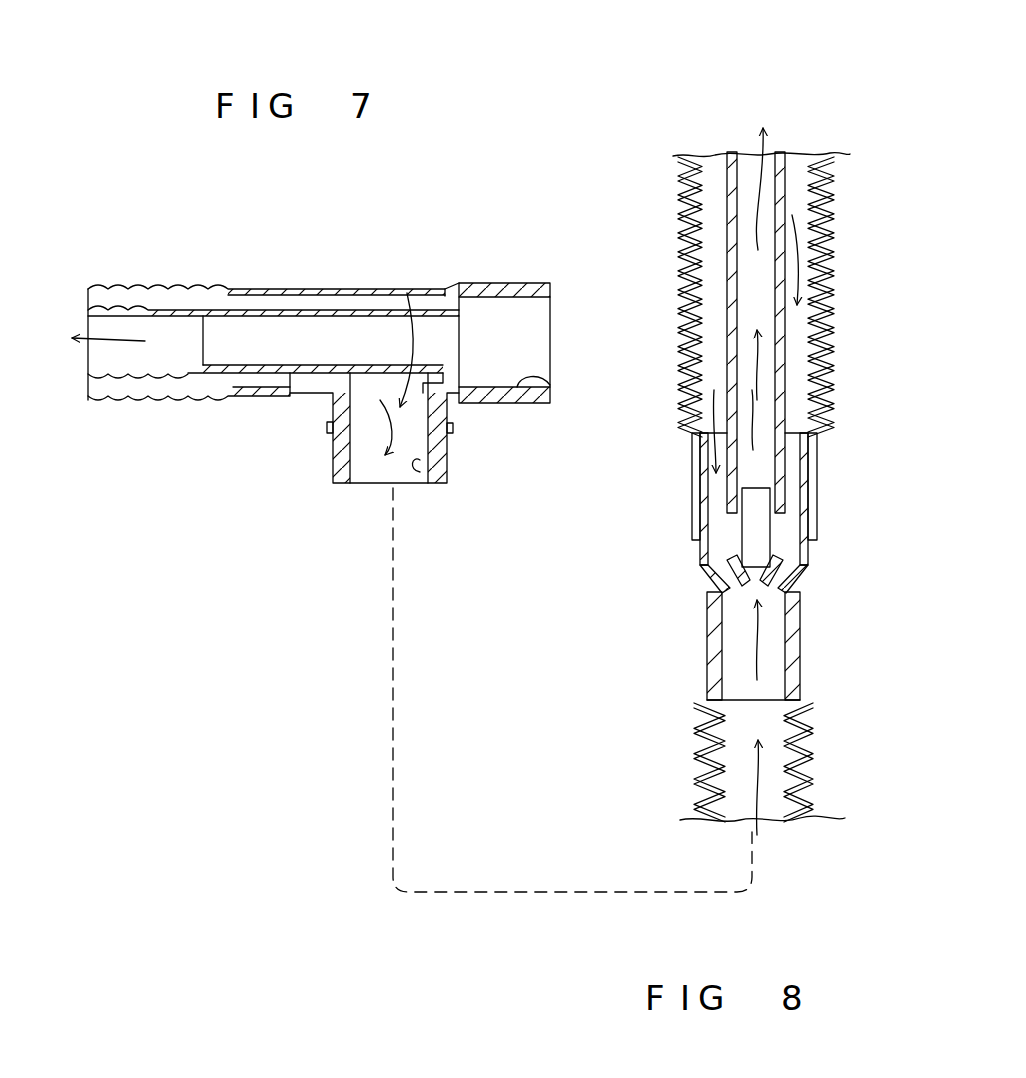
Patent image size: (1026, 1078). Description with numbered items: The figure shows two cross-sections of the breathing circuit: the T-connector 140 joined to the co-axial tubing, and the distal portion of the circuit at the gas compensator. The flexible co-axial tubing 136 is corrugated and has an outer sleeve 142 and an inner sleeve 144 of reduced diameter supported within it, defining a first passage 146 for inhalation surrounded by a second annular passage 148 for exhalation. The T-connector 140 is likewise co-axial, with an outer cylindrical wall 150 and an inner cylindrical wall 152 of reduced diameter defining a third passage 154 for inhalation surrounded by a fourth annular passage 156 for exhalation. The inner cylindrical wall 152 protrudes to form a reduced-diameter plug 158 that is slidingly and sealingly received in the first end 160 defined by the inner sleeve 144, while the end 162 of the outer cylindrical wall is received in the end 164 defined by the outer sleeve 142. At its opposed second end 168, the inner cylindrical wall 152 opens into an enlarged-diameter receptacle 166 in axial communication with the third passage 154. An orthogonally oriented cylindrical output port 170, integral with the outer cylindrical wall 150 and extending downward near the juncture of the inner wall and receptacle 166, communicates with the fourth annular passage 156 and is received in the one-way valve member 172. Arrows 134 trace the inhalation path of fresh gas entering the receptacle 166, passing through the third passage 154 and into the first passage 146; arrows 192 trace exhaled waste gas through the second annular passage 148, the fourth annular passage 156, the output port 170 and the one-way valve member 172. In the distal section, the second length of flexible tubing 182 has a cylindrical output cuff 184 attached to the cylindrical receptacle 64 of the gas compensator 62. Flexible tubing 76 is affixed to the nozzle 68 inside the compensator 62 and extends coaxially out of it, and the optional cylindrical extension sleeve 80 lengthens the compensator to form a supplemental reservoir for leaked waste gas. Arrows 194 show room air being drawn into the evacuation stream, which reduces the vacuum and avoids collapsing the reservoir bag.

In FIG. 7, the arrows 134 is at (298, 341).
In FIG. 7, the flexible co-axial tubing 136 is at (112, 420).
In FIG. 7, the T-connector 140 is at (404, 283).
In FIG. 7, the outer sleeve 142 is at (118, 288).
In FIG. 7, the inner sleeve 144 is at (150, 288).
In FIG. 7, the first passage 146 is at (170, 356).
In FIG. 7, the second annular passage 148 is at (172, 288).
In FIG. 7, the outer cylindrical wall 150 is at (423, 296).
In FIG. 7, the inner cylindrical wall 152 is at (300, 375).
In FIG. 7, the third passage 154 is at (227, 350).
In FIG. 7, the fourth annular passage 156 is at (360, 297).
In FIG. 7, the plug 158 is at (205, 378).
In FIG. 7, the first end 160 is at (255, 377).
In FIG. 7, the end of outer cylindrical wall 162 is at (225, 288).
In FIG. 7, the end of outer sleeve 164 is at (317, 288).
In FIG. 7, the receptacle 166 is at (552, 388).
In FIG. 7, the second end 168 is at (552, 345).
In FIG. 7, the cylindrical output port 170 is at (430, 488).
In FIG. 7, the one-way valve member 172 is at (448, 460).
In FIG. 7, the arrows 192 is at (72, 287).
In FIG. 8, the arrows 192 is at (790, 153).
In FIG. 8, the arrows 194 is at (718, 165).
In FIG. 8, the flexible tubing 76 is at (803, 153).
In FIG. 8, the cylindrical extension sleeve 80 is at (823, 270).
In FIG. 8, the nozzle 68 is at (777, 530).
In FIG. 8, the gas compensator 62 is at (817, 553).
In FIG. 8, the cylindrical receptacle 64 is at (797, 645).
In FIG. 8, the flexible tubing 182 is at (813, 737).
In FIG. 8, the cylindrical output cuff 184 is at (803, 610).